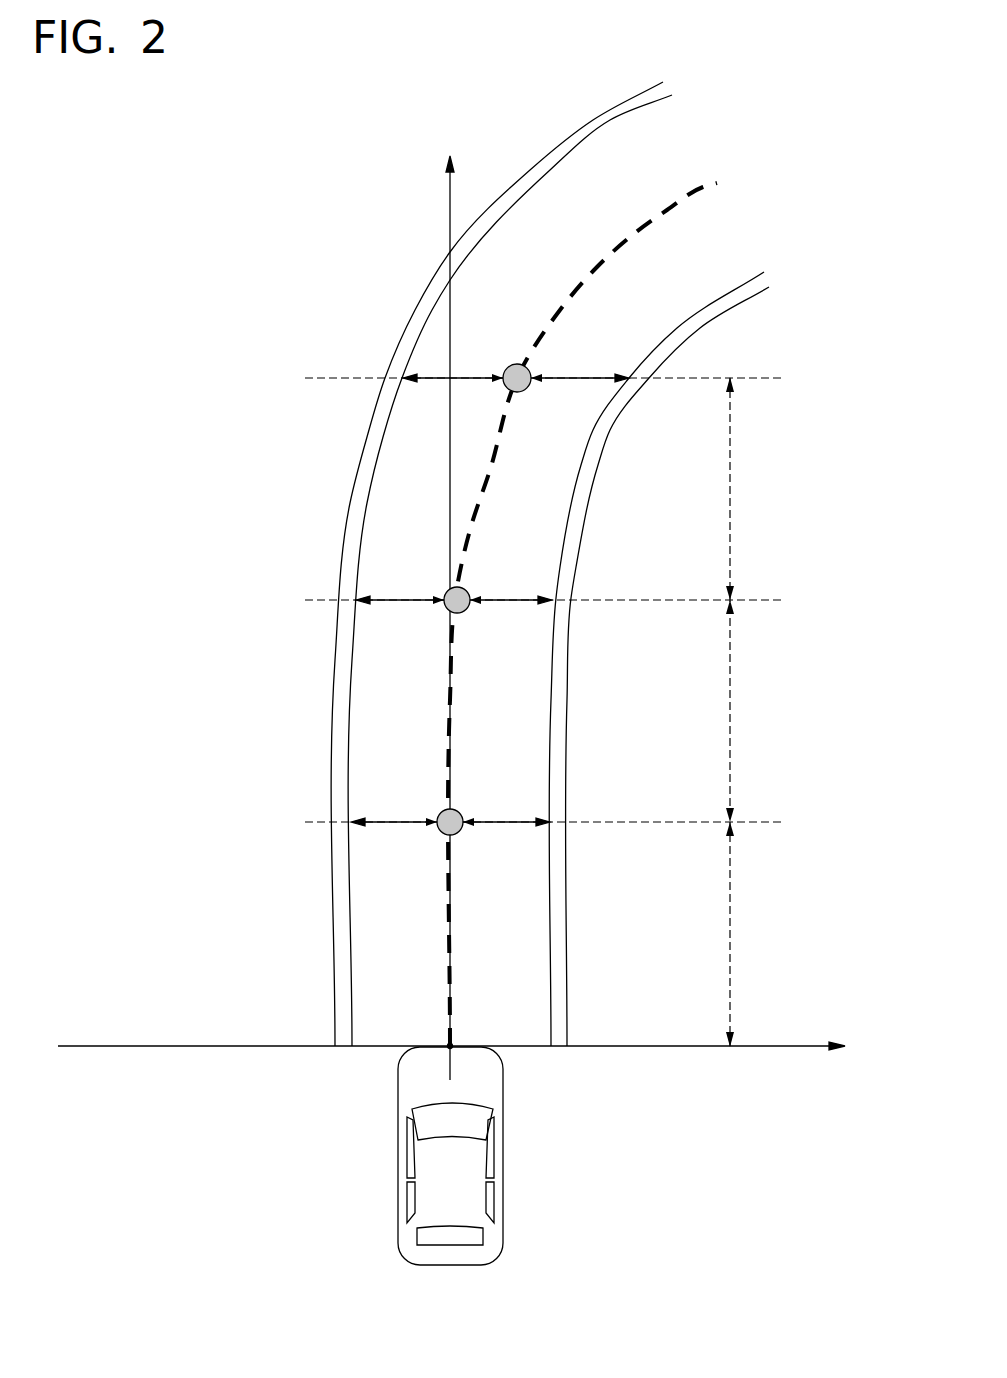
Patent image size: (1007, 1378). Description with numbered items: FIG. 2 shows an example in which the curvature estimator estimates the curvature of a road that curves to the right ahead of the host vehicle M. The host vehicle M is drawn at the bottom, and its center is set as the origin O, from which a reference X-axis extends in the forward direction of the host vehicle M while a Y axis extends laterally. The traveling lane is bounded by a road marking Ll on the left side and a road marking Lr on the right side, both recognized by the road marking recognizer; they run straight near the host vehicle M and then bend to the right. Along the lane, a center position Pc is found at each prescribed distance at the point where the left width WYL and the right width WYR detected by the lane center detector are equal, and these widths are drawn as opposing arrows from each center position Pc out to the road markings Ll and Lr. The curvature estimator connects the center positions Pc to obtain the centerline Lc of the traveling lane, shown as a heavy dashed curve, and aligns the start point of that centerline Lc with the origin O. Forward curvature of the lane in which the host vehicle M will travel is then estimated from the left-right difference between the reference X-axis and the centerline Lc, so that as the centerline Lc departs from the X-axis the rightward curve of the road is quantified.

The reference X-axis X is at (450, 602).
The Y axis (vehicle lateral direction) Y is at (463, 1049).
The road marking on the left side Ll is at (335, 971).
The road marking on the right side Lr is at (568, 971).
The centerline Lc is at (632, 234).
The center position Pc is at (456, 807).
The left width WYL is at (401, 821).
The right width WYR is at (514, 821).
The origin O is at (450, 1047).
The host vehicle M is at (502, 1157).